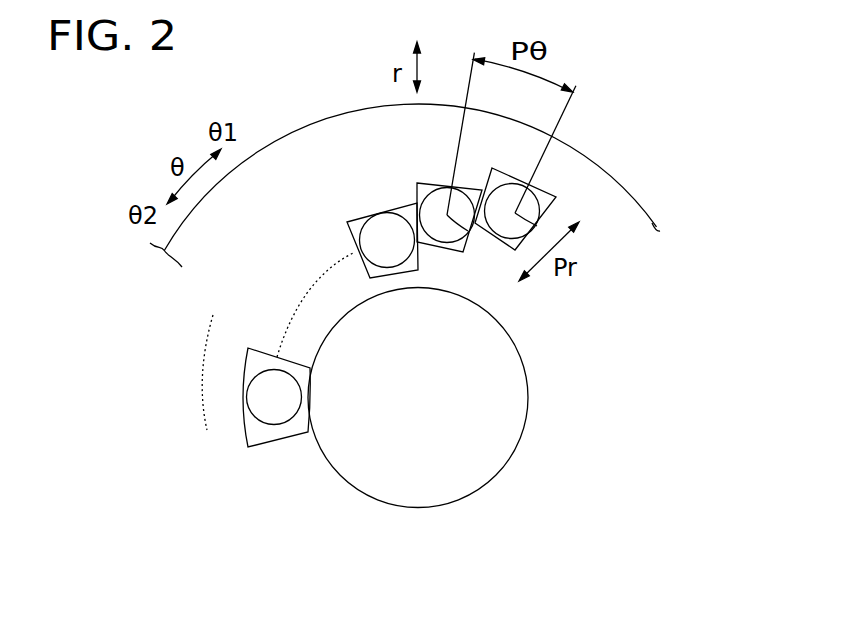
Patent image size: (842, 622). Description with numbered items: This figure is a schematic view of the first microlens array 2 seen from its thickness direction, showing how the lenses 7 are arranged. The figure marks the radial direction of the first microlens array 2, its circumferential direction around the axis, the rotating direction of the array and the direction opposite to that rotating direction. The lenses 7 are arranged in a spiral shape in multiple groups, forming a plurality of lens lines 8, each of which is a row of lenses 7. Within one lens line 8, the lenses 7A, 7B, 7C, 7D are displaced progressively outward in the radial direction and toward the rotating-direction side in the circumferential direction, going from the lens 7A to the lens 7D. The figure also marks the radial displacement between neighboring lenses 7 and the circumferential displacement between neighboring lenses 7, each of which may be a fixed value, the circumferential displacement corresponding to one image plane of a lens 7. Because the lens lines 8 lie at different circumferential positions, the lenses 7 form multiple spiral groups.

The first microlens array 2 is at (648, 210).
The lenses 7 is at (461, 298).
The lens 7A is at (267, 410).
The lens 7B is at (385, 247).
The lens 7C is at (436, 205).
The lens 7D is at (533, 208).
The lens lines 8 is at (302, 292).